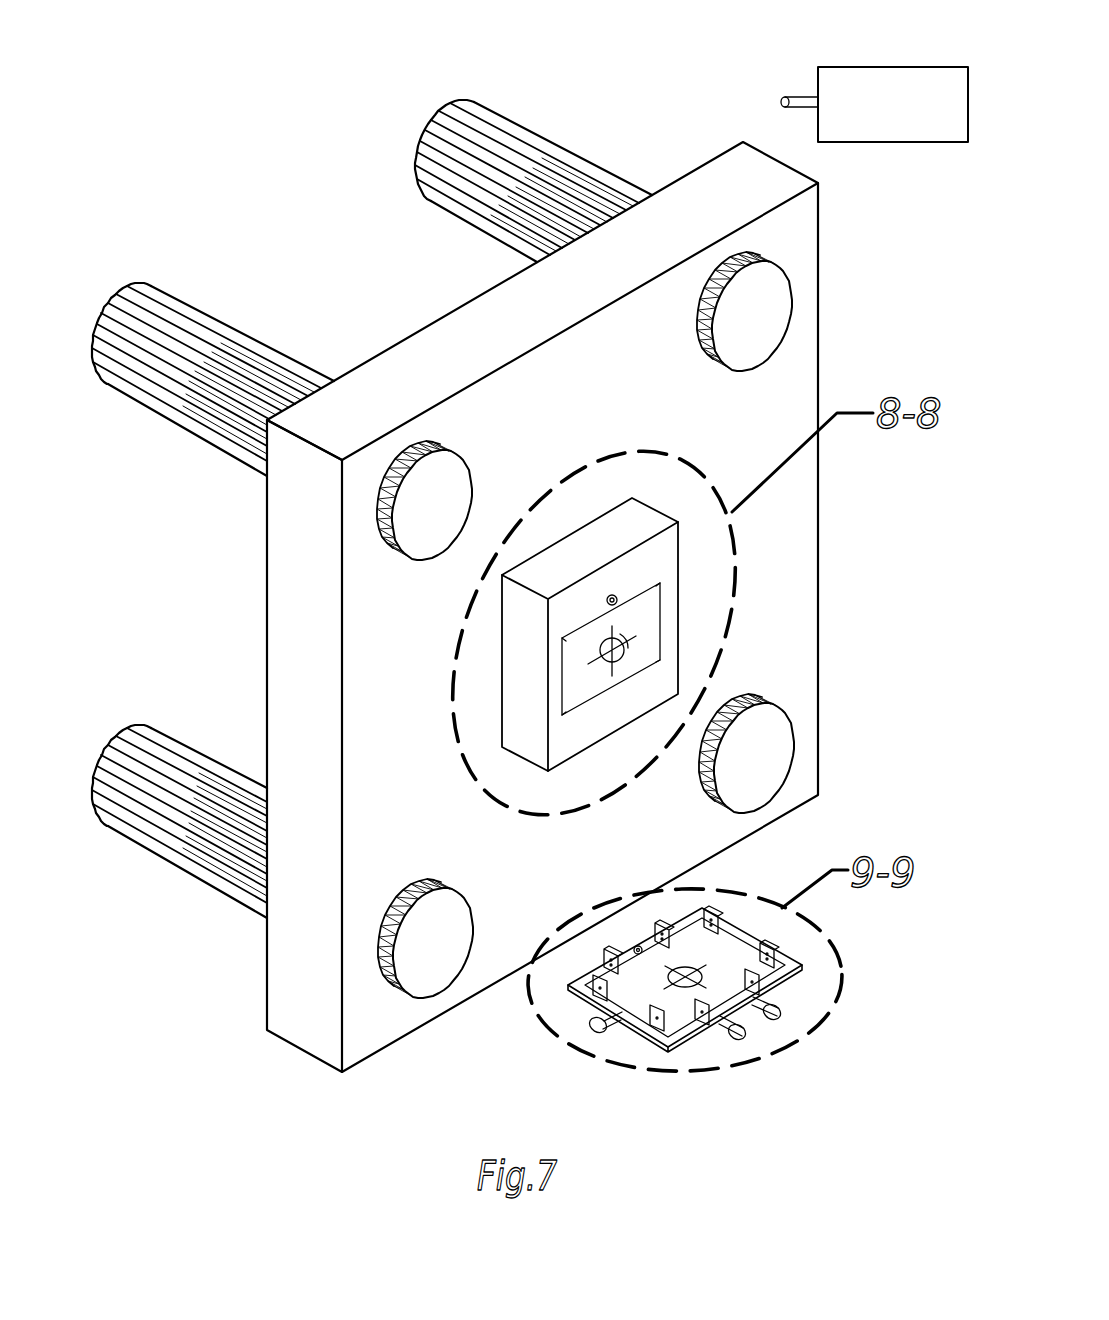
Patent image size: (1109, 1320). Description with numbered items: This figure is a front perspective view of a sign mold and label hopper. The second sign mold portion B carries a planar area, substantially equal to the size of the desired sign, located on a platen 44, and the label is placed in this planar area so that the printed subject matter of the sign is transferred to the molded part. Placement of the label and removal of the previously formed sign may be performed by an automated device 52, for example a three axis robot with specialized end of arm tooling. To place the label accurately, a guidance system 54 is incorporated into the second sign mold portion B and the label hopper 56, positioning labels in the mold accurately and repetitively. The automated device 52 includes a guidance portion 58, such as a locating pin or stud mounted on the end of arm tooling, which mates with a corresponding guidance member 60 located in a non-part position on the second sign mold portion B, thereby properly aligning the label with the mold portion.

The platen 44 is at (281, 684).
The automated device 52 is at (866, 67).
The guidance system 54 is at (624, 588).
The label hopper 56 is at (634, 950).
The guidance portion 58 is at (795, 94).
The guidance member 60 is at (607, 603).